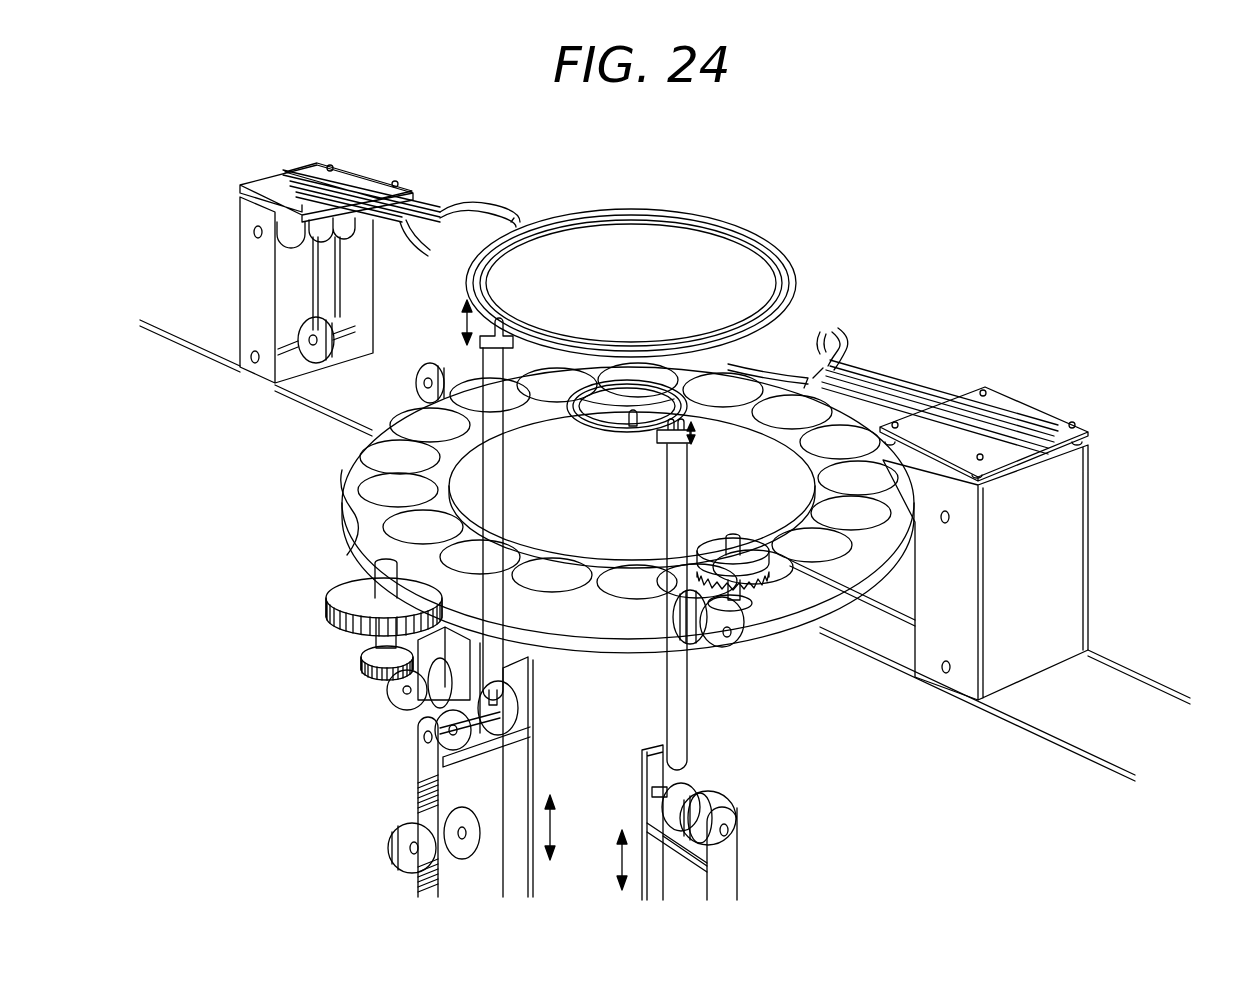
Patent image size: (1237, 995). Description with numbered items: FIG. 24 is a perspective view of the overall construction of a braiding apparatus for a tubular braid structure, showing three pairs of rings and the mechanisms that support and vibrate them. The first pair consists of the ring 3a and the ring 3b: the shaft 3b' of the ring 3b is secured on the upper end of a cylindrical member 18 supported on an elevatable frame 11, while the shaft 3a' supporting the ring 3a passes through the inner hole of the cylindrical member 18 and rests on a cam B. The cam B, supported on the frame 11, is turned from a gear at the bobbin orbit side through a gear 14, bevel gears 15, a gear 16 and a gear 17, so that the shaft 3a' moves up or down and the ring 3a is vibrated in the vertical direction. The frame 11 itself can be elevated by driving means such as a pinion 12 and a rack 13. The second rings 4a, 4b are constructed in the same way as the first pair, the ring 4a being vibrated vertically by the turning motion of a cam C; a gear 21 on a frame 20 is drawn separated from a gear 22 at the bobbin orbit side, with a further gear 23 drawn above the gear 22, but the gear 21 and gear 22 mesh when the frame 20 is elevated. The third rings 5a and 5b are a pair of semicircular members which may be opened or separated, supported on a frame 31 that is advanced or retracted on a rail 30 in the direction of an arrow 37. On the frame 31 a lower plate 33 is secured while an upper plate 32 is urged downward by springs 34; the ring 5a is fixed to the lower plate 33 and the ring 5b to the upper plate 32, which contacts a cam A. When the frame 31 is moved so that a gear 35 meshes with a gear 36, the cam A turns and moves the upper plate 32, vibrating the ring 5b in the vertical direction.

The ring 3a is at (642, 262).
The ring 3b is at (648, 283).
The shaft 3a' is at (475, 500).
The shaft 3b' is at (631, 283).
The second ring 4a is at (602, 428).
The second ring 4b is at (642, 430).
The third ring 5a is at (420, 257).
The third ring 5b is at (479, 210).
The elevatable frame 11 is at (531, 772).
The pinion 12 is at (392, 836).
The rack 13 is at (420, 804).
The gear 14 is at (330, 600).
The bevel gears 15 is at (360, 672).
The gear 16 is at (412, 704).
The gear 17 is at (470, 749).
The cylindrical member 18 is at (505, 480).
The frame 20 is at (738, 862).
The gear 21 is at (716, 806).
The gear 22 is at (692, 654).
The drive gear 23 is at (718, 544).
The rail 30 is at (302, 400).
The frame 31 is at (228, 262).
The upper plate 32 is at (356, 173).
The lower plate 33 is at (236, 220).
The springs 34 is at (1087, 436).
The gear 35 is at (332, 348).
The gear 36 is at (432, 362).
The arrow 37 is at (1060, 692).
The cam A is at (296, 242).
The cam B is at (508, 698).
The cam C is at (688, 792).